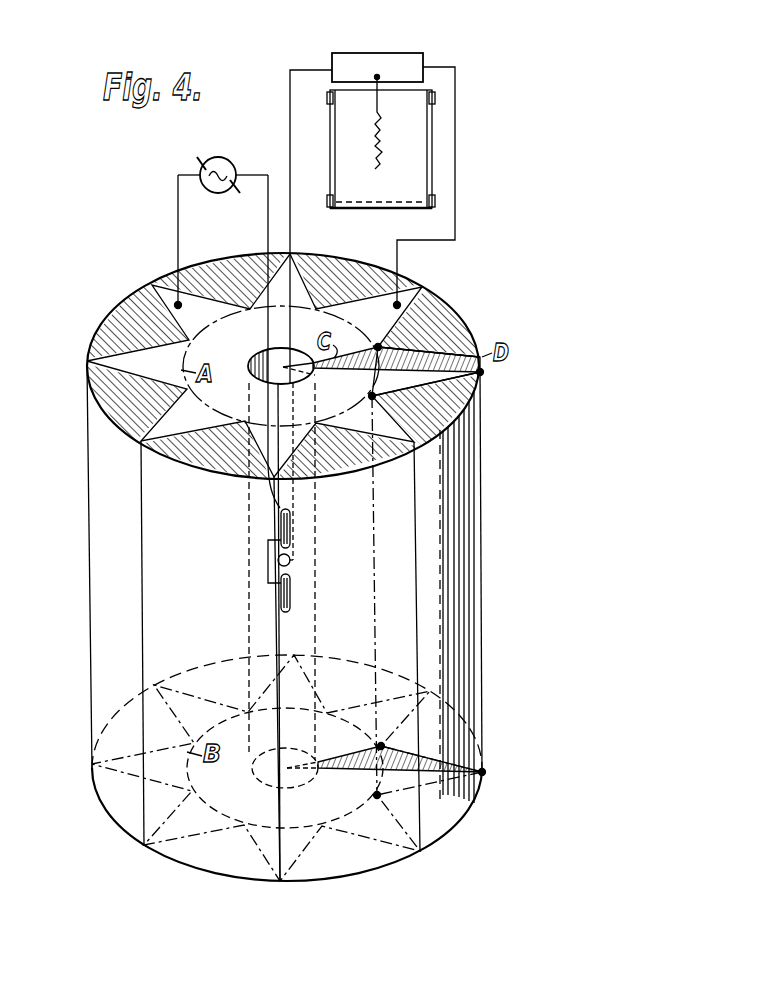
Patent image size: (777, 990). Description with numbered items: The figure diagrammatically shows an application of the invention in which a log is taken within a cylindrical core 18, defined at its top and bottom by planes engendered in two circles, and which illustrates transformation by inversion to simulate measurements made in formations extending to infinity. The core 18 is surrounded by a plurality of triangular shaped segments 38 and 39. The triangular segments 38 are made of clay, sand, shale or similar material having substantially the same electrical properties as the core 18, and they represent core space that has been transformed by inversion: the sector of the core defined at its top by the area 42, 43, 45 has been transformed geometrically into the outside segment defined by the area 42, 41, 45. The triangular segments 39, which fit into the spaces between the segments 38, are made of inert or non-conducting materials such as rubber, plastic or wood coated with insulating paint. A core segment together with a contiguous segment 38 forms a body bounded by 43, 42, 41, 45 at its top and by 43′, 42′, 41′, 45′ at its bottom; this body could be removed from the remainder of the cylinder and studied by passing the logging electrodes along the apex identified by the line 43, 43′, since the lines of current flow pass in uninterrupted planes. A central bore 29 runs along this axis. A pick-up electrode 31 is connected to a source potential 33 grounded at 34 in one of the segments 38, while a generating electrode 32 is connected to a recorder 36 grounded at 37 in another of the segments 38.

The core 18 is at (82, 553).
The central bore 29 is at (243, 635).
The pick-up electrode 31 is at (281, 593).
The generating electrode 32 is at (290, 564).
The source potential 33 is at (226, 158).
The ground 34 is at (179, 308).
The recorder 36 is at (374, 44).
The ground 37 is at (399, 303).
The triangular segments 38 is at (396, 316).
The triangular segments 39 is at (456, 323).
The apex point 41 is at (484, 373).
The point 42 is at (378, 346).
The apex point 43 is at (280, 349).
The point 45 is at (370, 397).
The apex point 41′ is at (486, 770).
The point 42′ is at (379, 746).
The apex point 43′ is at (286, 786).
The point 45′ is at (375, 796).